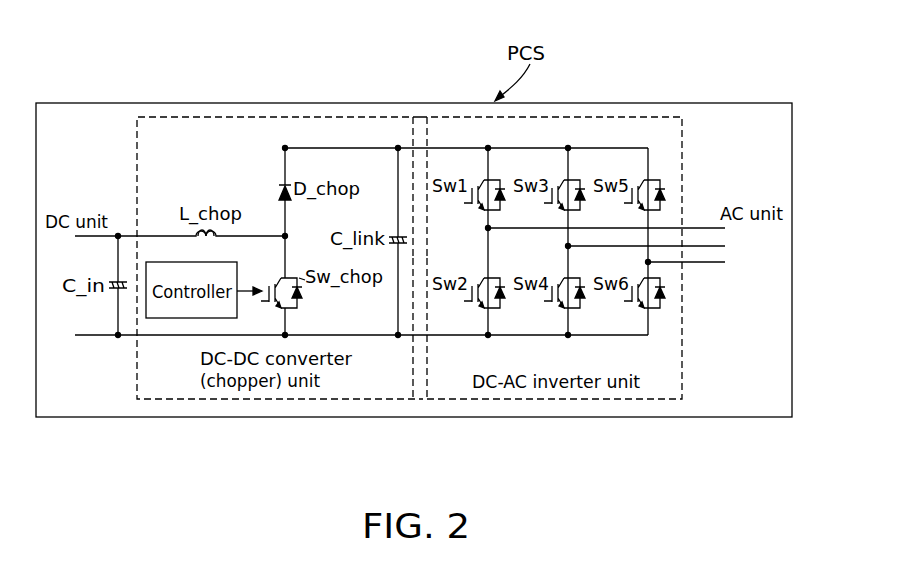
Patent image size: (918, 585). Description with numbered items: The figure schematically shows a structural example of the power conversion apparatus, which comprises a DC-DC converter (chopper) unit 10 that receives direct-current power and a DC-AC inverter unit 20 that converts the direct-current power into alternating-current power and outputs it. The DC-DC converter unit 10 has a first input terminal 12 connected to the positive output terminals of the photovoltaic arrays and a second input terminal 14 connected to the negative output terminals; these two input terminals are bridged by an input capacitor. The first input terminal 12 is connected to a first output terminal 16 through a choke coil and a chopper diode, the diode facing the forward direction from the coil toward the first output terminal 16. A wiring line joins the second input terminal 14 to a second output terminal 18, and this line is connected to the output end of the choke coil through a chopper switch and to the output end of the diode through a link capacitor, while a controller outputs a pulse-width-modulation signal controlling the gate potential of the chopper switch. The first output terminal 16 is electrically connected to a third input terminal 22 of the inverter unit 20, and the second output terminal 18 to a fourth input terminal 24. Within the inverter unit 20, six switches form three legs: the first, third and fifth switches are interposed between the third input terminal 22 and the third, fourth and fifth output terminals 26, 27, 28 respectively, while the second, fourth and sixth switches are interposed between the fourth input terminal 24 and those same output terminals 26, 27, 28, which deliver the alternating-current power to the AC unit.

The DC-DC converter unit 10 is at (263, 117).
The first input terminal 12 is at (138, 236).
The second input terminal 14 is at (137, 336).
The first output terminal 16 is at (413, 148).
The second output terminal 18 is at (413, 335).
The DC-AC inverter unit 20 is at (578, 117).
The third input terminal 22 is at (427, 148).
The fourth input terminal 24 is at (427, 335).
The third output terminal 26 is at (682, 228).
The fourth output terminal 27 is at (685, 247).
The fifth output terminal 28 is at (682, 263).